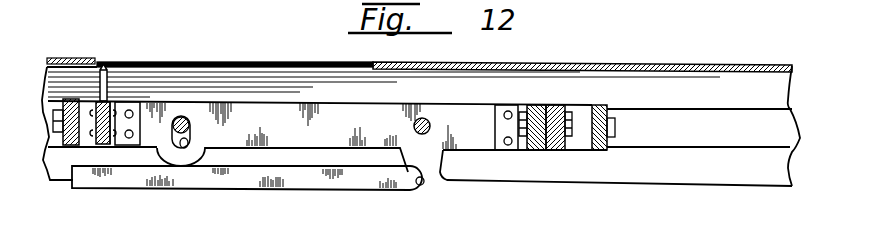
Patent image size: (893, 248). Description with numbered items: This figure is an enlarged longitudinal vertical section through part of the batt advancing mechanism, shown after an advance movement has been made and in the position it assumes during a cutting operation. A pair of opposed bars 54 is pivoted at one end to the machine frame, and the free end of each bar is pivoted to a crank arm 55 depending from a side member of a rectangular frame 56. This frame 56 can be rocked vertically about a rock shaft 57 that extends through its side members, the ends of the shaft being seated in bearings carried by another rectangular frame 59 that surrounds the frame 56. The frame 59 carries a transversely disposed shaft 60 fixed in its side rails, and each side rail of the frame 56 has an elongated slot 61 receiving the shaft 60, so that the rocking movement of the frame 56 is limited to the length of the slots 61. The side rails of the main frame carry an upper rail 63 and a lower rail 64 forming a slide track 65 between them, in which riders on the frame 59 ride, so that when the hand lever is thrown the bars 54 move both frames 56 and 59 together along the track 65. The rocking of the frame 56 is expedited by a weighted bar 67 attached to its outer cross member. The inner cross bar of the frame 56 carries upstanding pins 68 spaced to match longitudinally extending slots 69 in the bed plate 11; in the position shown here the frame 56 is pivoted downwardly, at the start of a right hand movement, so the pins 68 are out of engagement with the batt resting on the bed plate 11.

The bed plate 11 is at (683, 52).
The bars 54 is at (240, 183).
The crank arm 55 is at (436, 167).
The rectangular frame 56 is at (279, 117).
The rock shaft 57 is at (432, 122).
The rectangular frame 59 is at (605, 150).
The shaft 60 is at (177, 135).
The elongated slot 61 is at (182, 148).
The upper rail 63 is at (710, 173).
The lower rail 64 is at (723, 88).
The slide track 65 is at (753, 137).
The weighted bar 67 is at (557, 151).
The upstanding pins 68 is at (105, 84).
The longitudinally extending slots 69 is at (187, 64).